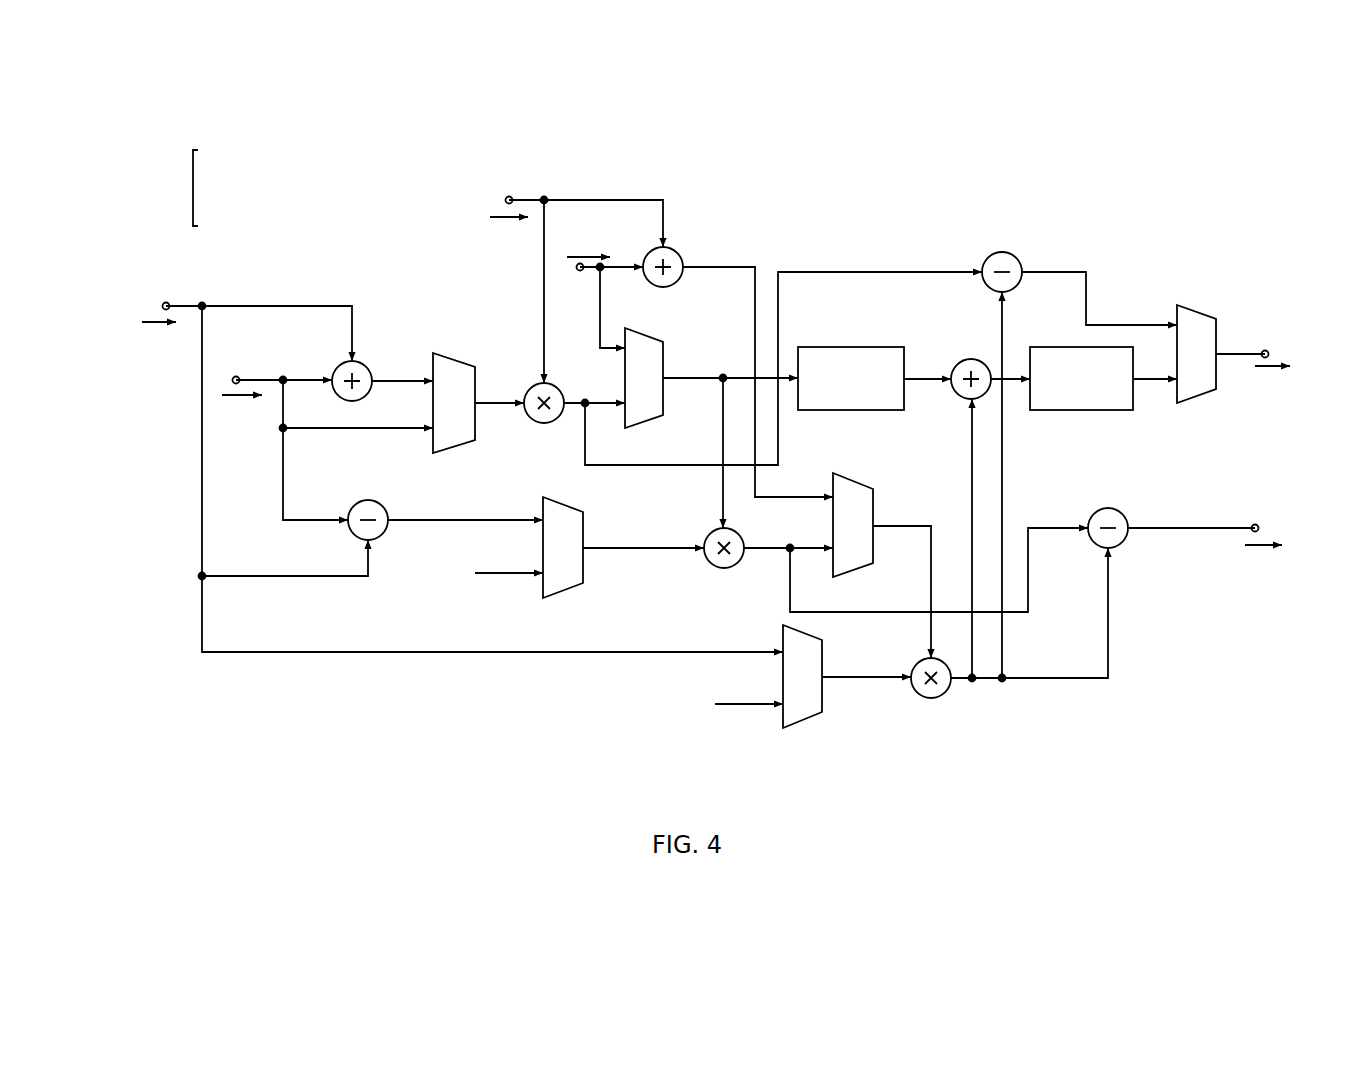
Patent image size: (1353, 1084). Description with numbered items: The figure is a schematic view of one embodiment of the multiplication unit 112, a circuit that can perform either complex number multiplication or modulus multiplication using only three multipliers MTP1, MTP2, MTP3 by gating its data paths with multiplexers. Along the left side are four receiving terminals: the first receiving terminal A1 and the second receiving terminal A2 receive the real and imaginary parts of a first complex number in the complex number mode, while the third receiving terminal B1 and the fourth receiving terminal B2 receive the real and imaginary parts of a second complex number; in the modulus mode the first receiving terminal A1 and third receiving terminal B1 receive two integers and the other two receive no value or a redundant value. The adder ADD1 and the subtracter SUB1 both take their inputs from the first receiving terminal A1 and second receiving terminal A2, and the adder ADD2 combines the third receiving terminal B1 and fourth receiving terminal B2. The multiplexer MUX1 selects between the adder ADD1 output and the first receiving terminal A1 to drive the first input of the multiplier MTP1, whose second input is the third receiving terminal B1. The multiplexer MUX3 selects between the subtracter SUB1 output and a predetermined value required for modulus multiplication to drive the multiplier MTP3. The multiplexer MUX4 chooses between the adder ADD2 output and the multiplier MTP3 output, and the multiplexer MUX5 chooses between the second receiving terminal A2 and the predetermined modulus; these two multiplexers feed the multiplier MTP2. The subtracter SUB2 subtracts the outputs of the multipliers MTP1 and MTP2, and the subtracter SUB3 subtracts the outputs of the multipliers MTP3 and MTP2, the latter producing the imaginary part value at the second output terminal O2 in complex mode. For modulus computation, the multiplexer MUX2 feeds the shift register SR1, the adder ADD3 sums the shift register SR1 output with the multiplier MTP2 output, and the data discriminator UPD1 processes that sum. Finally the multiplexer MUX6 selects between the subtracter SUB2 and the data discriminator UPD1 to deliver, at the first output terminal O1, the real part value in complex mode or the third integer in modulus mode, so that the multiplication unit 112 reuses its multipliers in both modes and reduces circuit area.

The multiplication unit 112 is at (1132, 220).
The first receiving terminal A1 is at (238, 376).
The second receiving terminal A2 is at (168, 302).
The third receiving terminal B1 is at (511, 196).
The fourth receiving terminal B2 is at (578, 271).
The first output terminal O1 is at (1267, 350).
The second output terminal O2 is at (1257, 524).
The adder ADD1 is at (365, 364).
The adder ADD2 is at (677, 250).
The adder ADD3 is at (960, 363).
The subtracter SUB1 is at (354, 505).
The subtracter SUB2 is at (1010, 253).
The subtracter SUB3 is at (1120, 511).
The multiplier MTP1 is at (530, 419).
The multiplier MTP2 is at (923, 700).
The multiplier MTP3 is at (712, 565).
The multiplexer MUX1 is at (457, 352).
The multiplexer MUX2 is at (692, 333).
The multiplexer MUX3 is at (612, 508).
The multiplexer MUX4 is at (902, 489).
The multiplexer MUX5 is at (823, 664).
The multiplexer MUX6 is at (1205, 314).
The shift register SR1 is at (851, 378).
The data discriminator UPD1 is at (1081, 378).